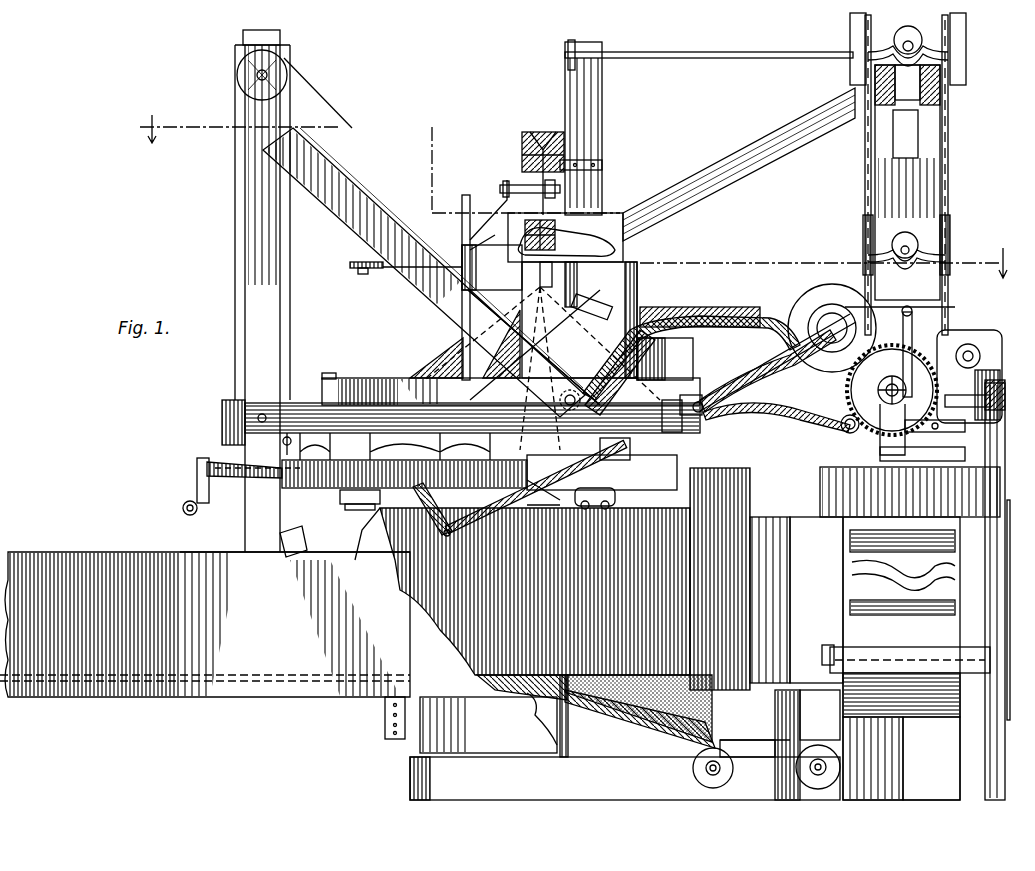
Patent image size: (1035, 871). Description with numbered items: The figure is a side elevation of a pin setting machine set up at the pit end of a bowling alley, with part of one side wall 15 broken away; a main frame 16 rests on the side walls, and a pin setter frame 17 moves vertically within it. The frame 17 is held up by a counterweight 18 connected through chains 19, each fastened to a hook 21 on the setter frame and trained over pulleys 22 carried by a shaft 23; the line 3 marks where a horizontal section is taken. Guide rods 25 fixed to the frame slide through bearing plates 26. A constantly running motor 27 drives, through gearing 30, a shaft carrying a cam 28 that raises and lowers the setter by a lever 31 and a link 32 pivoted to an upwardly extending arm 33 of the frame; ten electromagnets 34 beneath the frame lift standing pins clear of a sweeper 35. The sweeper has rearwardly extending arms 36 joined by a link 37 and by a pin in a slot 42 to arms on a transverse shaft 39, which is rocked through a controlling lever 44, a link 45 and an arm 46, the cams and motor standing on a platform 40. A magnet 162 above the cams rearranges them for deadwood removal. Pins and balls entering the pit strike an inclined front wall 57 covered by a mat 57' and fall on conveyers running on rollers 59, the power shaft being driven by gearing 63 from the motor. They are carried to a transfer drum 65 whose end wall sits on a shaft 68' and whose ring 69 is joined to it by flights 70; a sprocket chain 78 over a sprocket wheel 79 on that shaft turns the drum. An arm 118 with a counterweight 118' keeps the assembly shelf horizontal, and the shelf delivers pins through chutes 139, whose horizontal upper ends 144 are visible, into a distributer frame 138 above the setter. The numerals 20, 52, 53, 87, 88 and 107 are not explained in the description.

The side walls 15 is at (214, 616).
The main frame 16 is at (235, 523).
The pin setter frame 17 is at (328, 490).
The counterweight 18 is at (222, 425).
The chains 19 is at (390, 165).
The pulley shaft 20 is at (240, 58).
The hook 21 is at (287, 450).
The pulleys 22 is at (288, 80).
The shaft 23 is at (284, 62).
The rods 25 is at (470, 195).
The bearing plates 26 is at (458, 385).
The motor 27 is at (992, 335).
The cam 28 is at (890, 330).
The gearing 30 is at (909, 30).
The lever 31 is at (755, 420).
The link 32 is at (520, 400).
The arm 33 is at (610, 405).
The electromagnets 34 is at (615, 500).
The sweeper 35 is at (197, 478).
The arms 36 is at (345, 505).
The link 37 is at (372, 500).
The shaft 39 is at (692, 420).
The platform 40 is at (940, 470).
The slot 42 is at (440, 492).
The controlling lever 44 is at (840, 428).
The link 45 is at (795, 375).
The arm 46 is at (712, 390).
The carriage 52 is at (747, 758).
The support block 53 is at (795, 716).
The inclined front wall 57 is at (585, 612).
The mat 57' is at (640, 738).
The rollers 59 is at (693, 772).
The gearing 63 is at (1006, 516).
The drum 65 is at (955, 625).
The shaft 68' is at (916, 741).
The ring 69 is at (1005, 368).
The flights 70 is at (902, 562).
The sprocket chain 78 is at (985, 722).
The sprocket wheel 79 is at (985, 652).
The guide rod 87 is at (863, 245).
The cradle 88 is at (903, 264).
The top bar 107 is at (764, 55).
The arm 118 is at (410, 285).
The counterweight 118' is at (357, 283).
The frame 138 is at (355, 378).
The chutes 139 is at (448, 355).
The upper ends 144 is at (762, 307).
The magnet 162 is at (912, 312).
The line 3— 3 is at (569, 196).